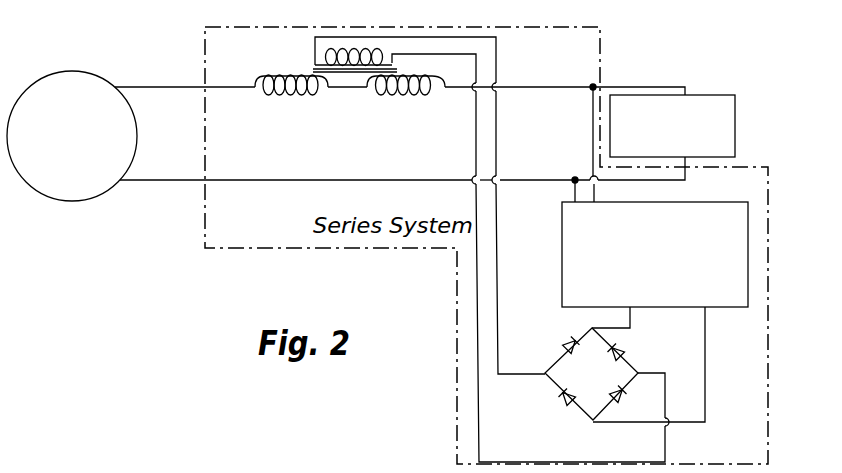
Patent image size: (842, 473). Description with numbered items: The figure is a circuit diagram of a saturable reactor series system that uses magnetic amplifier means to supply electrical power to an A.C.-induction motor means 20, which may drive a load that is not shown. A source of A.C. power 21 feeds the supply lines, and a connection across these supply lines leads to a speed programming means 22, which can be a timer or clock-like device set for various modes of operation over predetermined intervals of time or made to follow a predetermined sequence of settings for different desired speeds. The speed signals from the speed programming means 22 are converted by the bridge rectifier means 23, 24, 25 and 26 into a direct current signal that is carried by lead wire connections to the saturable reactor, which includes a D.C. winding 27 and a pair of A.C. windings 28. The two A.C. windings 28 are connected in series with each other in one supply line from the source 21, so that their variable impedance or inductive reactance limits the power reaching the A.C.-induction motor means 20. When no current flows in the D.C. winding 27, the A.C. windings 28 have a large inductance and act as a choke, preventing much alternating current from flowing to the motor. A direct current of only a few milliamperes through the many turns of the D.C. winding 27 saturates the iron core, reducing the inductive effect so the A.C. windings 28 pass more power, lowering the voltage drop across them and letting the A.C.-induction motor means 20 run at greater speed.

The A.C.-induction motor means 20 is at (147, 61).
The source of A.C. power 21 is at (720, 95).
The speed programming means 22 is at (562, 238).
The bridge rectifier means 23 is at (577, 341).
The bridge rectifier means 24 is at (626, 356).
The bridge rectifier means 25 is at (623, 392).
The bridge rectifier means 26 is at (571, 410).
The D.C. winding 27 is at (362, 50).
The A.C. windings 28 is at (413, 92).